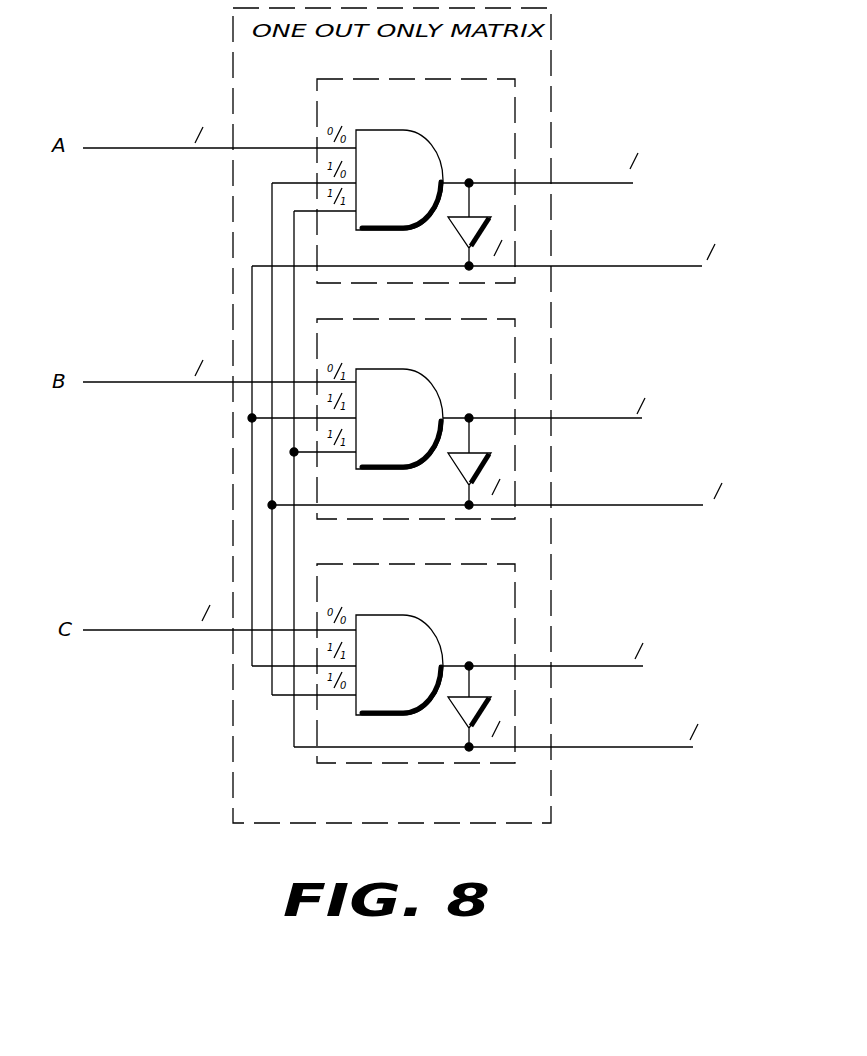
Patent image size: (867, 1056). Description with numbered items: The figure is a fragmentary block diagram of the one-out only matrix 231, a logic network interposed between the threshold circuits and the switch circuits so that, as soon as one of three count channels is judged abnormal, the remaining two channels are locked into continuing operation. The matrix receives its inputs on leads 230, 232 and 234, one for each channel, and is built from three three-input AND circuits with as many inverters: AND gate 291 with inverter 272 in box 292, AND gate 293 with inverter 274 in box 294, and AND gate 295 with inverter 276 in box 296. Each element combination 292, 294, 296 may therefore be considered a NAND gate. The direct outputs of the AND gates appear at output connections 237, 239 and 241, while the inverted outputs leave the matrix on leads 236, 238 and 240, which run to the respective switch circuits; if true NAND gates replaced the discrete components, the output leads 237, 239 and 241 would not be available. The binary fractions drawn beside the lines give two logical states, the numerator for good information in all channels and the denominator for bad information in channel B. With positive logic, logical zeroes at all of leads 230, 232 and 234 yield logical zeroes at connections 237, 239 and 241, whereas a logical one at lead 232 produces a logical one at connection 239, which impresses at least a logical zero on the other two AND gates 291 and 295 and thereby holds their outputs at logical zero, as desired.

The lead 230 is at (107, 148).
The lead 232 is at (100, 382).
The lead 234 is at (107, 630).
The one-out only matrix 231 is at (515, 823).
The element combination 292 is at (465, 79).
The element combination 294 is at (447, 319).
The element combination 296 is at (437, 564).
The AND gate 291 is at (410, 132).
The AND gate 293 is at (425, 380).
The AND gate 295 is at (425, 628).
The inverter 272 is at (456, 237).
The inverter 274 is at (460, 476).
The inverter 276 is at (458, 720).
The output connection 237 is at (577, 182).
The lead 236 is at (645, 266).
The output connection 239 is at (614, 404).
The lead 238 is at (672, 492).
The output connection 241 is at (612, 650).
The lead 240 is at (630, 747).